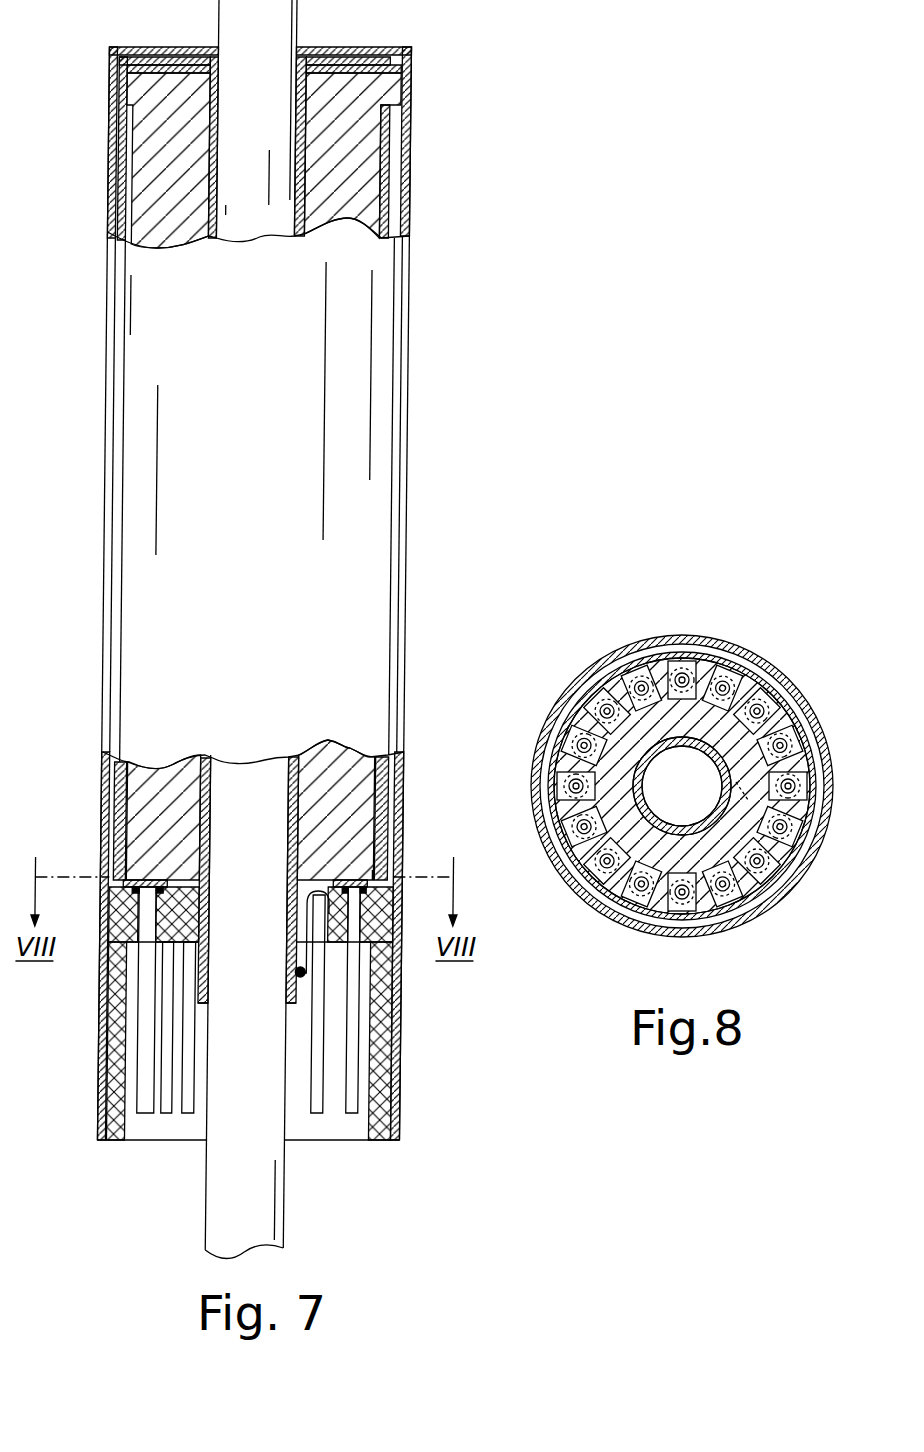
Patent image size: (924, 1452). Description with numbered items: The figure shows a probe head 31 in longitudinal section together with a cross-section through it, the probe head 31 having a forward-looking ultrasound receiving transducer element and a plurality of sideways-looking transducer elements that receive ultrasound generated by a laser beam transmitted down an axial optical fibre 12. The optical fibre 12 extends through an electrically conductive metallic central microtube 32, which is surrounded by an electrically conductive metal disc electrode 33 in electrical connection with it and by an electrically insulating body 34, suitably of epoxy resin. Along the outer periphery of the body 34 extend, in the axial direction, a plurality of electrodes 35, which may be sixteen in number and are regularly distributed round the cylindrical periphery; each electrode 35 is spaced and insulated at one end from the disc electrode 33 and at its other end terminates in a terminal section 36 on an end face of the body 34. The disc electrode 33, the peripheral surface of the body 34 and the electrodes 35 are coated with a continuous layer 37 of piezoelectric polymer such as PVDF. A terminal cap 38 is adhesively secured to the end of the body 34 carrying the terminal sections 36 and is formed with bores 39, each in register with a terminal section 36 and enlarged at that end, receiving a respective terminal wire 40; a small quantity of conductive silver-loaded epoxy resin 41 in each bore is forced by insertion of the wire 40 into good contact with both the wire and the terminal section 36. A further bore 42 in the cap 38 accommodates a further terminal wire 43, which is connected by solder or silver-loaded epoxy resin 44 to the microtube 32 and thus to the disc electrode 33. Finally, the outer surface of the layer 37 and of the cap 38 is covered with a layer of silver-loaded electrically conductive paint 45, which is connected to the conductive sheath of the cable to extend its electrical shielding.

In FIG. 7, the optical fibre 12 is at (305, 1192).
In FIG. 8, the optical fibre 12 is at (687, 765).
In FIG. 7, the probe head 31 is at (472, 413).
In FIG. 7, the central microtube 32 is at (308, 745).
In FIG. 8, the central microtube 32 is at (707, 827).
In FIG. 7, the disc electrode 33 is at (380, 72).
In FIG. 7, the insulating body 34 is at (151, 790).
In FIG. 8, the insulating body 34 is at (620, 760).
In FIG. 7, the electrodes 35 is at (135, 818).
In FIG. 8, the electrodes 35 is at (775, 670).
In FIG. 7, the terminal section 36 is at (377, 870).
In FIG. 8, the terminal section 36 is at (810, 750).
In FIG. 7, the piezoelectric polymer layer 37 is at (397, 812).
In FIG. 8, the piezoelectric polymer layer 37 is at (800, 705).
In FIG. 7, the terminal cap 38 is at (124, 1010).
In FIG. 7, the bores 39 is at (160, 912).
In FIG. 7, the terminal wire 40 is at (201, 1037).
In FIG. 8, the terminal wire 40 is at (682, 655).
In FIG. 7, the silver-loaded epoxy resin 41 is at (387, 897).
In FIG. 8, the silver-loaded epoxy resin 41 is at (628, 660).
In FIG. 7, the further bore 42 is at (310, 890).
In FIG. 8, the further bore 42 is at (770, 805).
In FIG. 7, the further terminal wire 43 is at (334, 1055).
In FIG. 8, the further terminal wire 43 is at (765, 788).
In FIG. 7, the solder or silver-loaded epoxy resin 44 is at (311, 975).
In FIG. 7, the conductive paint layer 45 is at (410, 205).
In FIG. 8, the conductive paint layer 45 is at (585, 668).